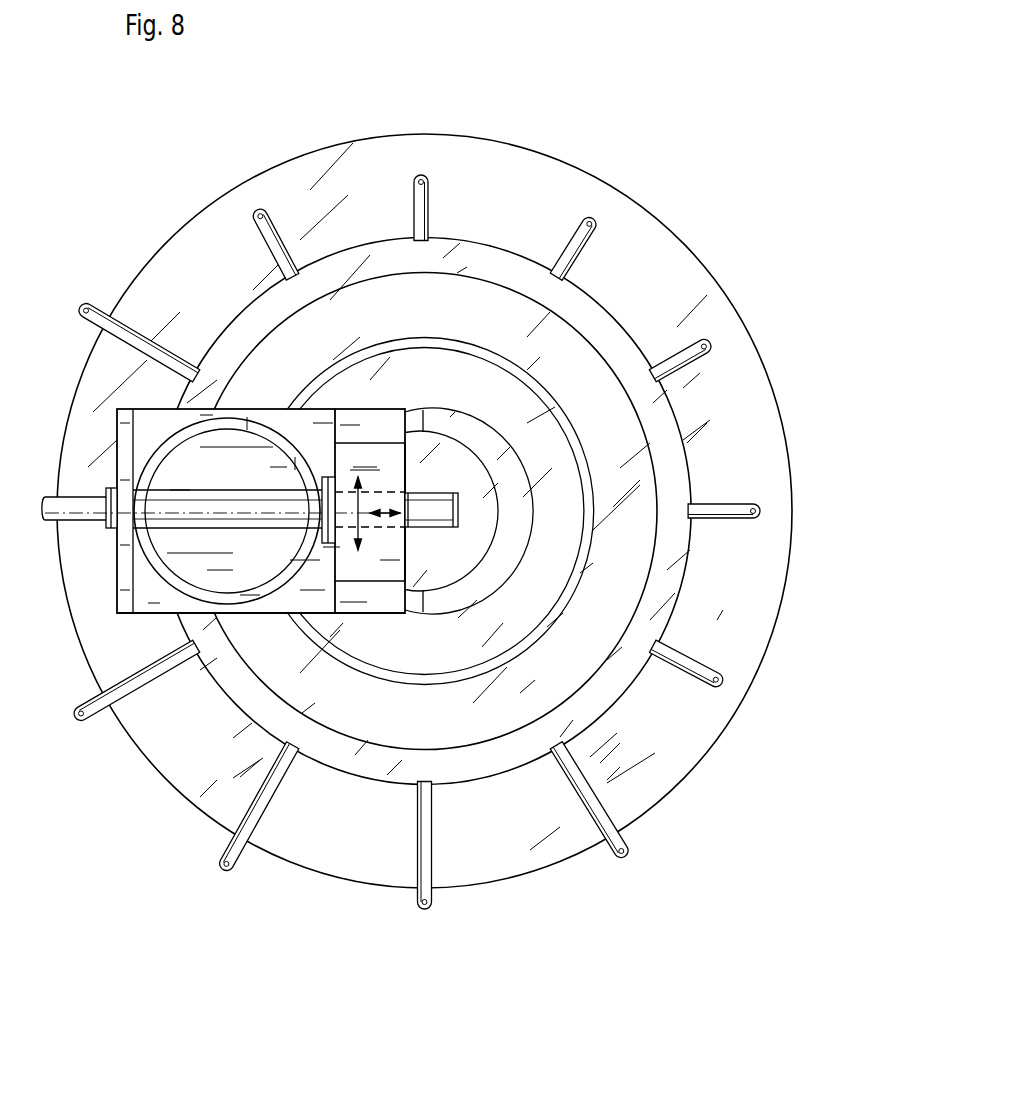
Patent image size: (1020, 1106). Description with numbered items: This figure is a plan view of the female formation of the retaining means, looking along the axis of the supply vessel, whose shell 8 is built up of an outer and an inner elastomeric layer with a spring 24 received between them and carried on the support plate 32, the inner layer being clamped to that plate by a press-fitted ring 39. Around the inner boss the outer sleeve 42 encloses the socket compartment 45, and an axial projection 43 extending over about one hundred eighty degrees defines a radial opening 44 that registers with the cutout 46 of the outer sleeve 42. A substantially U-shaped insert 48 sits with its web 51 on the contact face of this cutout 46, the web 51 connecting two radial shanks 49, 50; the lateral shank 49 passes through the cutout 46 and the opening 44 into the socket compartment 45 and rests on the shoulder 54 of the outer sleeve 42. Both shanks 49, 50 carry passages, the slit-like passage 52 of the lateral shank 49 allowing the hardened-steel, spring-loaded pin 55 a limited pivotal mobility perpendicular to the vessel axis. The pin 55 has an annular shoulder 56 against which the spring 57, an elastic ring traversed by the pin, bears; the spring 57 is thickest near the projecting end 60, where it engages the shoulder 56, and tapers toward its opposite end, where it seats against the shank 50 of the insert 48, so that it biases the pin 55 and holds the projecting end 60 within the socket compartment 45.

The shell 8 is at (656, 834).
The spring 24 is at (219, 864).
The support plate 32 is at (219, 780).
The press-fitted ring 39 is at (348, 613).
The outer sleeve 42 is at (473, 577).
The axial projection 43 is at (453, 653).
The radial opening 44 is at (403, 607).
The socket compartment 45 is at (483, 497).
The cutout 46 is at (317, 697).
The U-shaped insert 48 is at (166, 616).
The radial shank 49 is at (377, 600).
The radial shank 50 is at (130, 557).
The web 51 is at (148, 602).
The slit-like passage 52 is at (363, 567).
The shoulder 54 is at (407, 412).
The spring-loaded pin 55 is at (180, 505).
The annular shoulder 56 is at (329, 480).
The spring 57 is at (155, 565).
The projecting end 60 is at (440, 493).